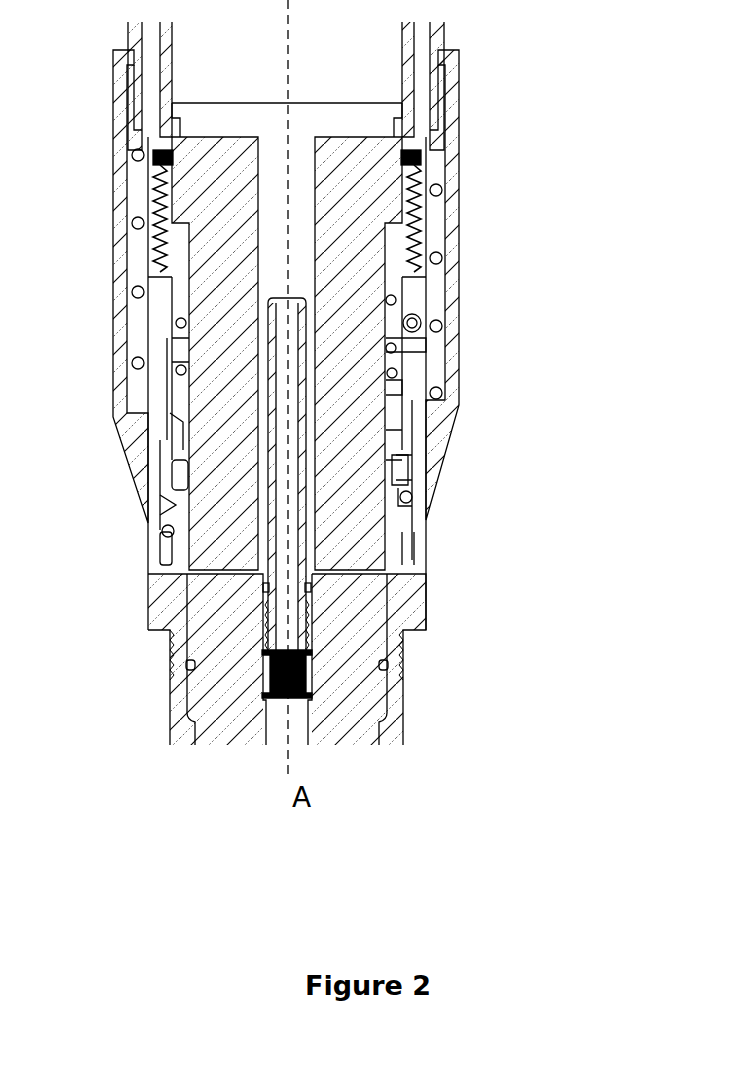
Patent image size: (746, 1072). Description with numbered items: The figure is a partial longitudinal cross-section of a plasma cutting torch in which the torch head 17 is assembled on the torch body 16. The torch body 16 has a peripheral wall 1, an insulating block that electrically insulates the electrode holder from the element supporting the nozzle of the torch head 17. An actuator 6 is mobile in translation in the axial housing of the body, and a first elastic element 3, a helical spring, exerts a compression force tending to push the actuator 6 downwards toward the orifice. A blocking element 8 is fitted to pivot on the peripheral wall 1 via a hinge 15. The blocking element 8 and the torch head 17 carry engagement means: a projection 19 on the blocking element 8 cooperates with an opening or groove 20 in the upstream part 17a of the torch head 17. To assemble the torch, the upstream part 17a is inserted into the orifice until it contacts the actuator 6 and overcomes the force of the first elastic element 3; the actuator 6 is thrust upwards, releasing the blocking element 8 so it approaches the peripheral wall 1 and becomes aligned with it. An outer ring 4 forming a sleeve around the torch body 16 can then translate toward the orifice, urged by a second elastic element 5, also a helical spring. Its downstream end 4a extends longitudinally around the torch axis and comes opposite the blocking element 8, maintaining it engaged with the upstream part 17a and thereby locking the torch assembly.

The peripheral wall 1 is at (150, 547).
The first elastic element 3 is at (442, 187).
The outer ring 4 is at (120, 372).
The downstream end 4a is at (438, 493).
The second elastic element 5 is at (128, 220).
The actuator 6 is at (390, 382).
The blocking element 8 is at (425, 347).
The hinge 15 is at (416, 316).
The torch body 16 is at (486, 89).
The torch head 17 is at (440, 681).
The upstream part 17a is at (405, 469).
The projection 19 is at (410, 498).
The opening or groove 20 is at (182, 502).